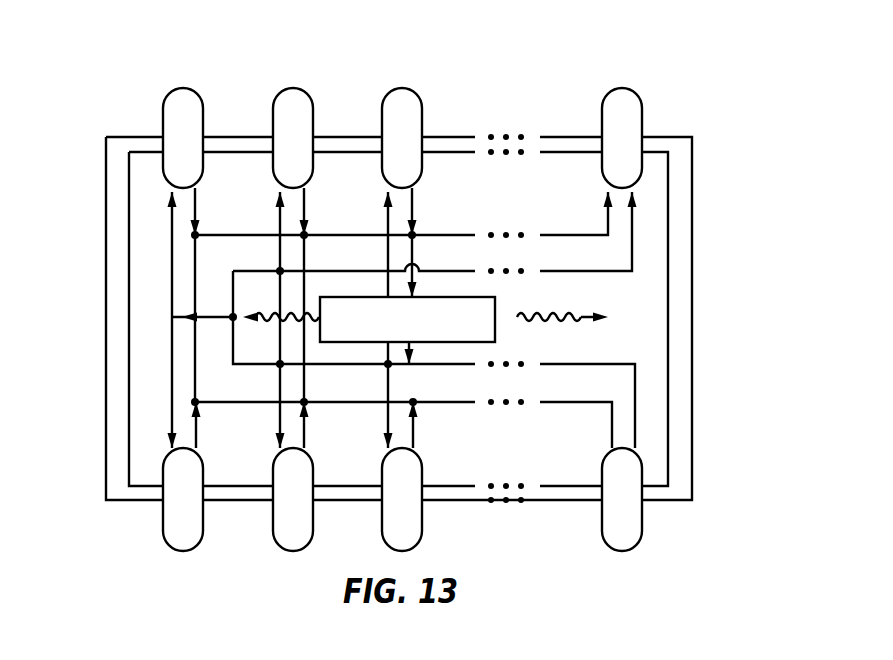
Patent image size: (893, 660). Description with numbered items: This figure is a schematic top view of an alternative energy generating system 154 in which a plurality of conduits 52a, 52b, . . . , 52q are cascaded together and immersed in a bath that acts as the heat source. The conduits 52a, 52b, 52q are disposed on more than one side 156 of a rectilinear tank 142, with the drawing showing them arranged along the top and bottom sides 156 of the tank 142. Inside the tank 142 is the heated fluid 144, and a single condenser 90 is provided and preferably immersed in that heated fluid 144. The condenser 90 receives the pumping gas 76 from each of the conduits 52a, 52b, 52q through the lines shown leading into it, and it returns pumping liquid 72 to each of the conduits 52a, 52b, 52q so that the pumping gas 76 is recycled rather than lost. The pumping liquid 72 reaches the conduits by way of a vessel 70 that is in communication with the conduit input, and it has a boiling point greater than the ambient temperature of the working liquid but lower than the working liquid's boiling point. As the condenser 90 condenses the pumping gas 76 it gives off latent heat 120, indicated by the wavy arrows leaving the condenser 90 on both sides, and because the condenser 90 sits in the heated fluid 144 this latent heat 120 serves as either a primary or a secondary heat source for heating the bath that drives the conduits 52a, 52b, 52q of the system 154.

The conduit 52a is at (184, 88).
The conduit 52b is at (293, 88).
The conduit 52q is at (622, 550).
The vessel 70 is at (593, 402).
The pumping liquid 72 is at (597, 274).
The pumping gas 76 is at (377, 235).
The condenser 90 is at (378, 297).
The latent heat 120 is at (313, 320).
The tank 142 is at (704, 195).
The heated fluid 144 is at (657, 263).
The energy generating system 154 is at (720, 58).
The side of tank 156 is at (137, 137).